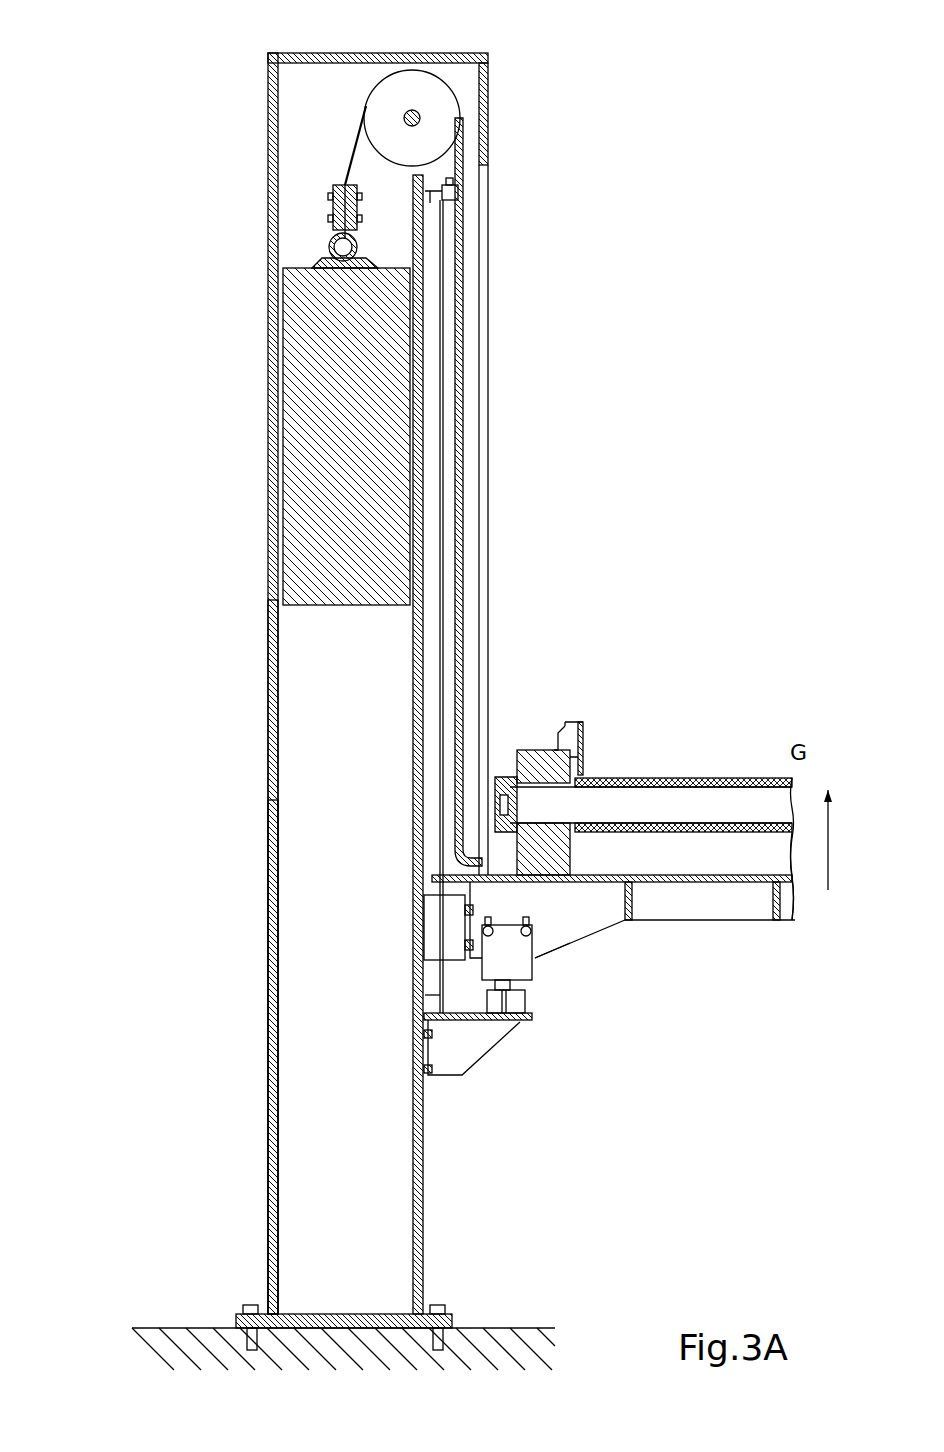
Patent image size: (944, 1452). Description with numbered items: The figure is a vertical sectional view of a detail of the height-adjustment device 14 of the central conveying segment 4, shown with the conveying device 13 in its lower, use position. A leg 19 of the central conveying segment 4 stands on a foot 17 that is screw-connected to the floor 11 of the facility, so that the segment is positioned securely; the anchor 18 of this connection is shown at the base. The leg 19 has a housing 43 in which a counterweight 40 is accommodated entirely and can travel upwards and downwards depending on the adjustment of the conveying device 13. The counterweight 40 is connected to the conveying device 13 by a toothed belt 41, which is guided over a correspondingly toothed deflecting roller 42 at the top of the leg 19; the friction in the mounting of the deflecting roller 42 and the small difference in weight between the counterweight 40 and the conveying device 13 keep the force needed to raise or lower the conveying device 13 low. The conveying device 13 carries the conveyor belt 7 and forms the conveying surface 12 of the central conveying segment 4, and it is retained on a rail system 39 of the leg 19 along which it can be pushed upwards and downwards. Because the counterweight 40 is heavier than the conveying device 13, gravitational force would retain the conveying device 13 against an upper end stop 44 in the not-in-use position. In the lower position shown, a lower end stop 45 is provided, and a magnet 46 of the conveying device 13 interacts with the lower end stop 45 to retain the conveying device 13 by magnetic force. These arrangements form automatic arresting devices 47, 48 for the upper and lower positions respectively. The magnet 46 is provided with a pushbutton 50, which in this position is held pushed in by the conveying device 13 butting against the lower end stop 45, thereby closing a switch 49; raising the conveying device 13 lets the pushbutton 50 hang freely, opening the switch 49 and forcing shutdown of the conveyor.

The height-adjustment device 14 is at (165, 72).
The central conveying segment 4 is at (165, 590).
The leg 19 is at (232, 730).
The housing 43 is at (270, 858).
The automatic arresting device 47 is at (527, 210).
The deflecting roller 42 is at (385, 105).
The toothed belt 41 is at (356, 150).
The upper end stop 44 is at (452, 200).
The counterweight 40 is at (305, 410).
The conveyor belt 7 is at (683, 778).
The conveying surface 12 is at (728, 770).
The conveying device 13 is at (718, 907).
The rail system 39 is at (422, 937).
The switch 49 is at (470, 1003).
The magnet 46 is at (512, 962).
The lower end stop 45 is at (512, 1003).
The automatic arresting device 48 is at (615, 1000).
The pushbutton 50 is at (512, 1020).
The floor 11 is at (182, 1326).
The foot 17 is at (343, 1315).
The anchor bolt 18 is at (413, 1330).